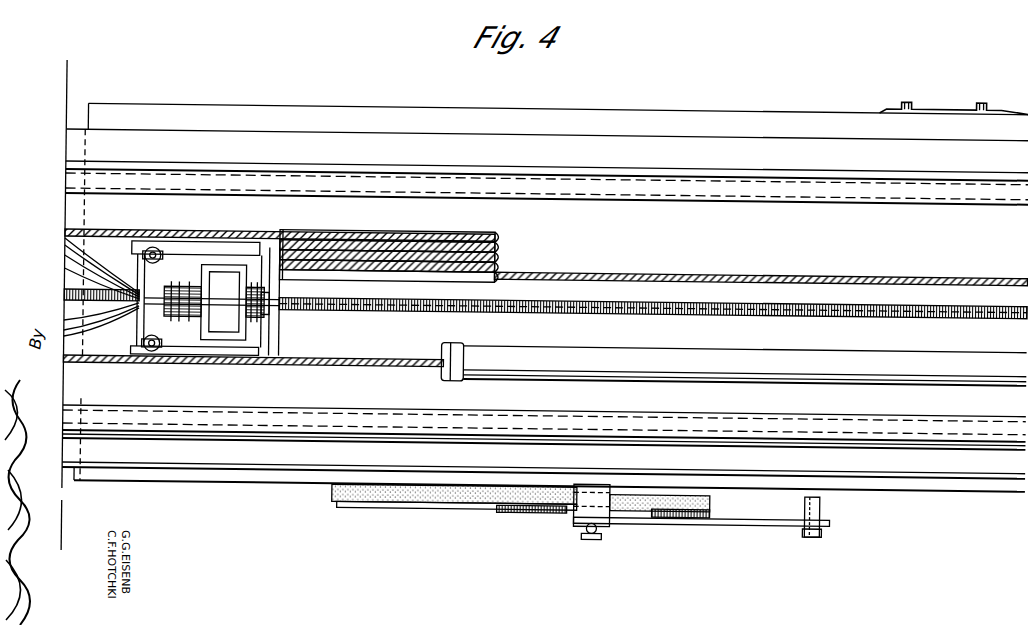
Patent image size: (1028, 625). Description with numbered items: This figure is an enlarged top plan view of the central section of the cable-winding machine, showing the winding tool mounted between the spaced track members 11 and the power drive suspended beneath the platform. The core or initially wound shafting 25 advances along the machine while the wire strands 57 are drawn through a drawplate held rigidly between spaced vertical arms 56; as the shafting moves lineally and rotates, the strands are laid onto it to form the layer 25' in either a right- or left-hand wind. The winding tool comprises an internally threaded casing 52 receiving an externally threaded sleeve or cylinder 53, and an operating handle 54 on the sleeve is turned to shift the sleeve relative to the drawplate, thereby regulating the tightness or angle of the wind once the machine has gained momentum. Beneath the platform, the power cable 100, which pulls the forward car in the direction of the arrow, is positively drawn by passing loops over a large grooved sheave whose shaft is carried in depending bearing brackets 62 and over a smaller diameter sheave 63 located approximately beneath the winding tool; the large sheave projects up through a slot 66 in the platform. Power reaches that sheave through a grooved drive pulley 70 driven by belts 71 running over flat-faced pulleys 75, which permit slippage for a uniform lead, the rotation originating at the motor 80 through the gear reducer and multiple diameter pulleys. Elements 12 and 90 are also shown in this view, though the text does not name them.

The track members 11 is at (1000, 158).
The track rail 12 is at (967, 190).
The motor 80 is at (960, 100).
The power cable 100 is at (690, 257).
The slot 66 is at (500, 252).
The layer 25' is at (653, 300).
The core or initially wound shafting 25 is at (76, 269).
The wire strands 57 is at (66, 318).
The operating handle 54 is at (310, 345).
The vertical arms 56 is at (160, 250).
The internally threaded casing 52 is at (225, 345).
The externally threaded sleeve or cylinder 53 is at (265, 318).
The cylinder 90 is at (843, 365).
The grooved drive pulley 70 is at (422, 497).
The belts 71 is at (490, 495).
The smaller diameter sheave 63 is at (588, 527).
The flat-faced pulleys 75 is at (715, 512).
The bearing brackets 62 is at (782, 518).